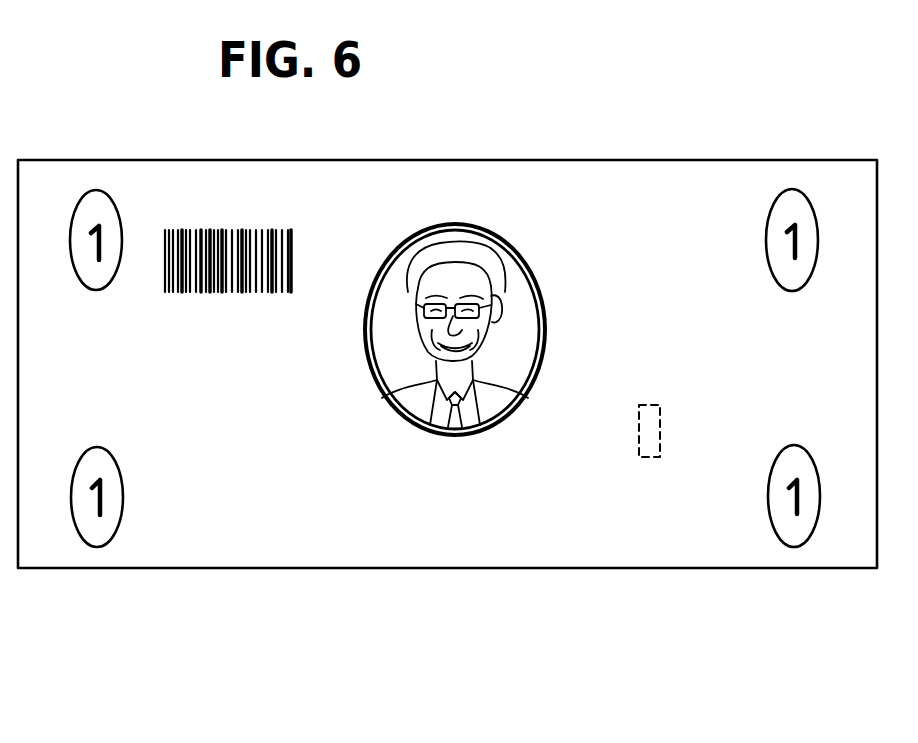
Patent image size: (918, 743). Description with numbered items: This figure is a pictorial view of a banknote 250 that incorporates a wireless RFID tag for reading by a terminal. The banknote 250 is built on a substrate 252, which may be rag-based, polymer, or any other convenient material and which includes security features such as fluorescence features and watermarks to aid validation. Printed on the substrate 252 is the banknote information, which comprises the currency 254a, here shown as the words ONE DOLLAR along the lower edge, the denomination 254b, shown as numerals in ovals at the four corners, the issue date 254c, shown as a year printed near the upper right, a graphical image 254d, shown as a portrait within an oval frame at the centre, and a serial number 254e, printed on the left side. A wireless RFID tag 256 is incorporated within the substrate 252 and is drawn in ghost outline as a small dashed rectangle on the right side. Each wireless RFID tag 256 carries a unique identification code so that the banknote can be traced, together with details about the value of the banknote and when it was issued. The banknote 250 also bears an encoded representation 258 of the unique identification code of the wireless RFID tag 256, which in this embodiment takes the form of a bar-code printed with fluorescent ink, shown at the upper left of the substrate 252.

The banknote 250 is at (184, 623).
The substrate 252 is at (533, 183).
The currency 254a is at (482, 530).
The denomination 254b is at (93, 226).
The issue date 254c is at (603, 243).
The graphical image 254d is at (363, 322).
The serial number 254e is at (215, 452).
The wireless RFID tag 256 is at (660, 418).
The encoded representation 258 is at (202, 296).